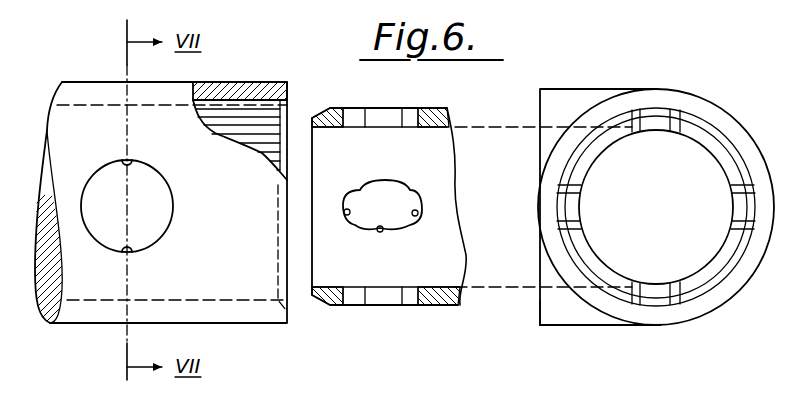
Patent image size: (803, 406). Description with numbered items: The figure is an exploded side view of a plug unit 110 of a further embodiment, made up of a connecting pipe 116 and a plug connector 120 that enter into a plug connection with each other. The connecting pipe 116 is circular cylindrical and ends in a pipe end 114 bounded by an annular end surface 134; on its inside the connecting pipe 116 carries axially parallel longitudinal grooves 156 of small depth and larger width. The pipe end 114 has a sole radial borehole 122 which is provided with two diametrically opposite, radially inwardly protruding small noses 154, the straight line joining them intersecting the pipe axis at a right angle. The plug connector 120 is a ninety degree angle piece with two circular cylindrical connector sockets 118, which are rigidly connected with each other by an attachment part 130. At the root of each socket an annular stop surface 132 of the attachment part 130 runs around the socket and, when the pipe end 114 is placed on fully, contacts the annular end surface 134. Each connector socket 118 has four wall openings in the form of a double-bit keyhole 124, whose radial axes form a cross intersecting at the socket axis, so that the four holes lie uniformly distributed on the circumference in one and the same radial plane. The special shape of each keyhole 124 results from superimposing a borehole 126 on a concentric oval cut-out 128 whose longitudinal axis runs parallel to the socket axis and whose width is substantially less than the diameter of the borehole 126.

The plug unit 110 is at (359, 333).
The pipe end 114 is at (238, 81).
The connecting pipe 116 is at (80, 333).
The connector socket 118 is at (448, 107).
The plug connector 120 is at (669, 87).
The borehole 122 is at (166, 206).
The double-bit keyhole 124 is at (375, 129).
The borehole 126 is at (380, 232).
The oval cut-out 128 is at (345, 216).
The attachment part 130 is at (598, 328).
The annular stop surface 132 is at (538, 317).
The annular end surface 134 is at (265, 133).
The small noses 154 is at (130, 157).
The longitudinal grooves 156 is at (303, 108).